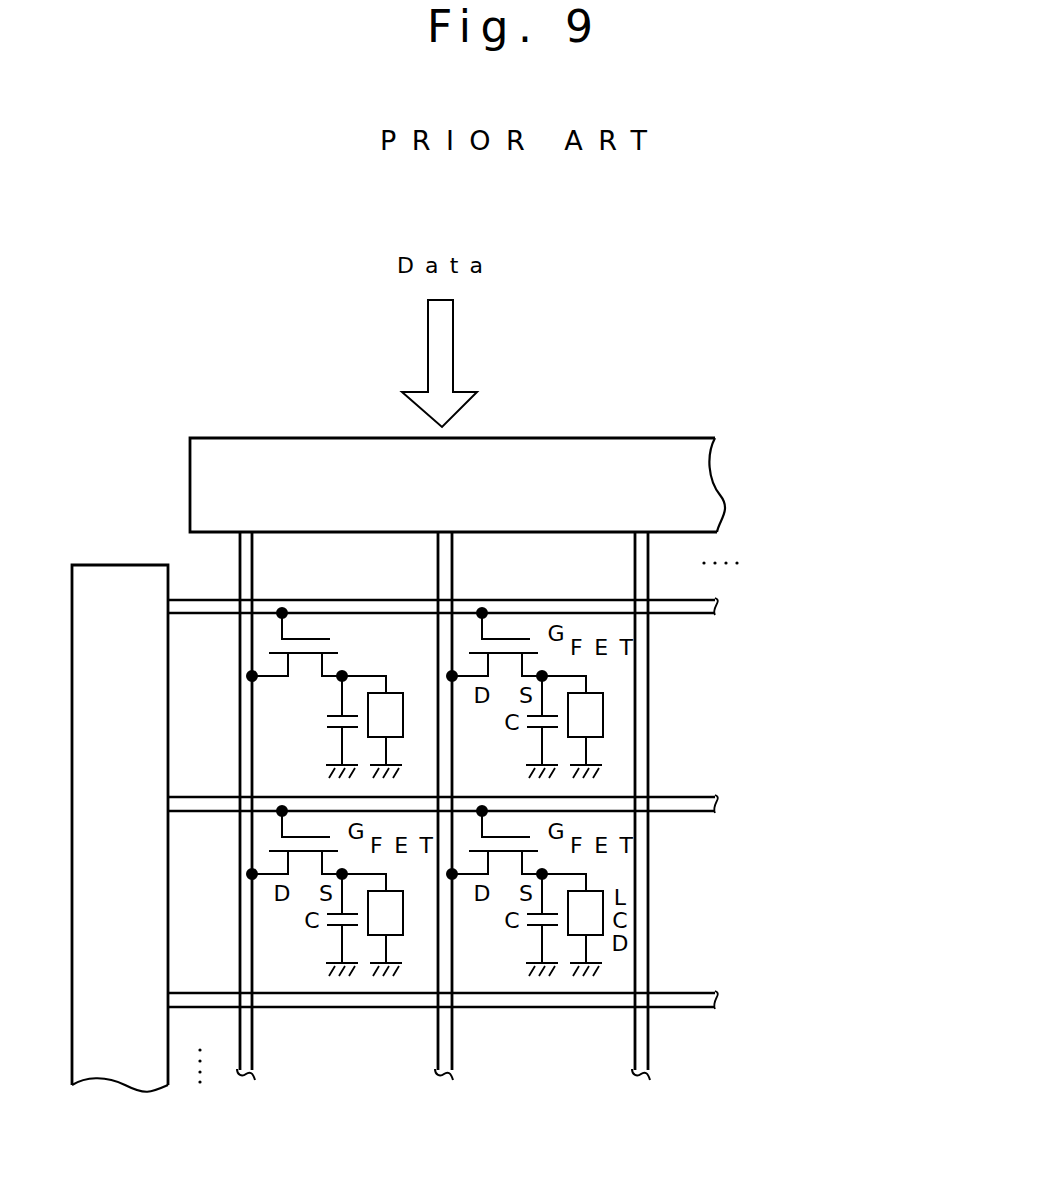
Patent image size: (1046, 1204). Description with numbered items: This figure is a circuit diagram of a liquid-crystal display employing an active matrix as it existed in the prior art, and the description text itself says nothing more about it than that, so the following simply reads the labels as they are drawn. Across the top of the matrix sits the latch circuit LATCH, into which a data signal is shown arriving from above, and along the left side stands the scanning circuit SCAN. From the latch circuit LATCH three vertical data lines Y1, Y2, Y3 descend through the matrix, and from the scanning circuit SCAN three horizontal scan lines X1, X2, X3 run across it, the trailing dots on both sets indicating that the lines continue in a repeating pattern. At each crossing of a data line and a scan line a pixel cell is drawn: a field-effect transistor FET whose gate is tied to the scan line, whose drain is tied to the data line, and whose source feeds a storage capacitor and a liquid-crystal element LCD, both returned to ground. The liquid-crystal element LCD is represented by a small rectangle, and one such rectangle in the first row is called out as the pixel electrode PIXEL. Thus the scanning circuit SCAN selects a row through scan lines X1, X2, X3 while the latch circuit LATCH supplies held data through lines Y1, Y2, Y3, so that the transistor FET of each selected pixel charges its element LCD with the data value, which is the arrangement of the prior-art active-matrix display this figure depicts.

The field effect transistor FET is at (340, 693).
The liquid crystal display element LCD is at (398, 920).
The pixel electrode PIXEL is at (748, 695).
The latch circuit LATCH is at (457, 485).
The scanning circuit SCAN is at (120, 828).
The data line Y1 is at (263, 806).
The data line Y2 is at (462, 806).
The data line Y3 is at (685, 806).
The scan line X1 is at (443, 626).
The scan line X2 is at (443, 824).
The scan line X3 is at (443, 1037).